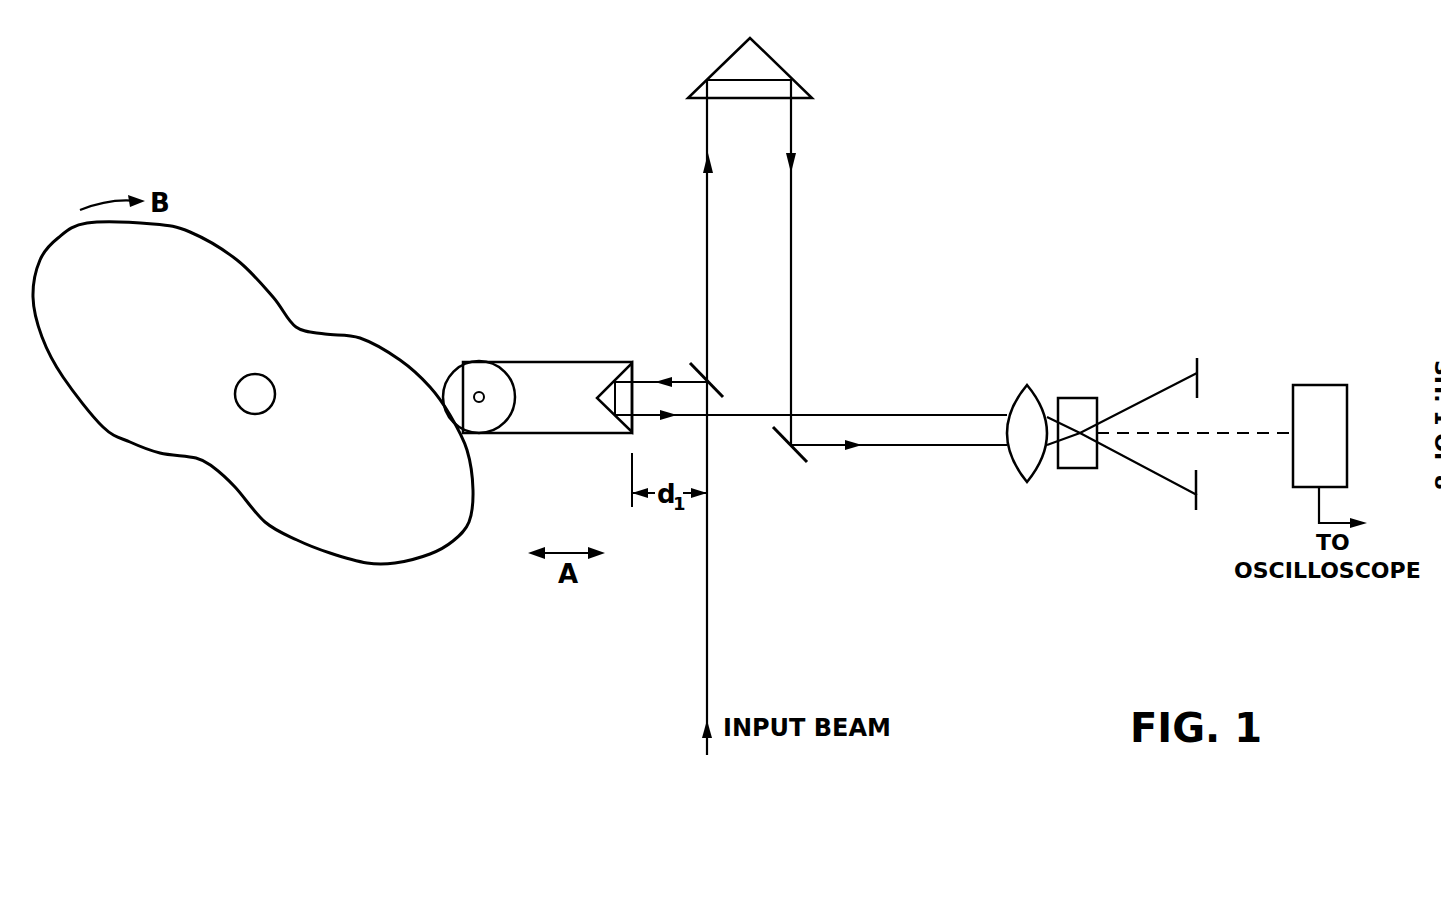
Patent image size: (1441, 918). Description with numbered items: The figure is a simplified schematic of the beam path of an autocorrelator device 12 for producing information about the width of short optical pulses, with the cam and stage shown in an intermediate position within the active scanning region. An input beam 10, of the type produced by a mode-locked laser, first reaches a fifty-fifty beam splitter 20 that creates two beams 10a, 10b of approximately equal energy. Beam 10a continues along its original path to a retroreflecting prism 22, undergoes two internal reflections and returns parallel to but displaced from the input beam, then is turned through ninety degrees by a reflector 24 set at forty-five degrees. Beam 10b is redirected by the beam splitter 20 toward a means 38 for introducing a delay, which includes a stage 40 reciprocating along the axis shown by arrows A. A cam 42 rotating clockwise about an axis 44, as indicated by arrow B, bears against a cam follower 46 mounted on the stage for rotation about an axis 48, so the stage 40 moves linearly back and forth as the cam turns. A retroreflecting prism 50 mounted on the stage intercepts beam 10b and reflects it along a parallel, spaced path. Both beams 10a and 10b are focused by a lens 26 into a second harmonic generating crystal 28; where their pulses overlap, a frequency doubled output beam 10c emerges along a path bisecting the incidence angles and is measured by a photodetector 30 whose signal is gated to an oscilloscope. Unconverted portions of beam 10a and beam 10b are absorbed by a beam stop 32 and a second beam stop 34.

The input beam 10 is at (707, 583).
The first beam 10a is at (705, 212).
The second beam 10b is at (652, 378).
The frequency doubled output beam 10c is at (1233, 433).
The device 12 is at (893, 263).
The beam splitter 20 is at (710, 383).
The retroreflecting prism 22 is at (778, 65).
The reflector 24 is at (797, 458).
The lens 26 is at (1017, 395).
The second harmonic generating crystal 28 is at (1078, 397).
The photodetector 30 is at (1323, 382).
The beam stop 32 is at (1198, 372).
The second beam stop 34 is at (1198, 497).
The means for introducing a delay 38 is at (460, 310).
The stage 40 is at (560, 361).
The cam 42 is at (179, 332).
The axis 44 is at (235, 393).
The cam follower 46 is at (521, 366).
The axis 48 is at (482, 401).
The retroreflecting prism 50 is at (604, 408).